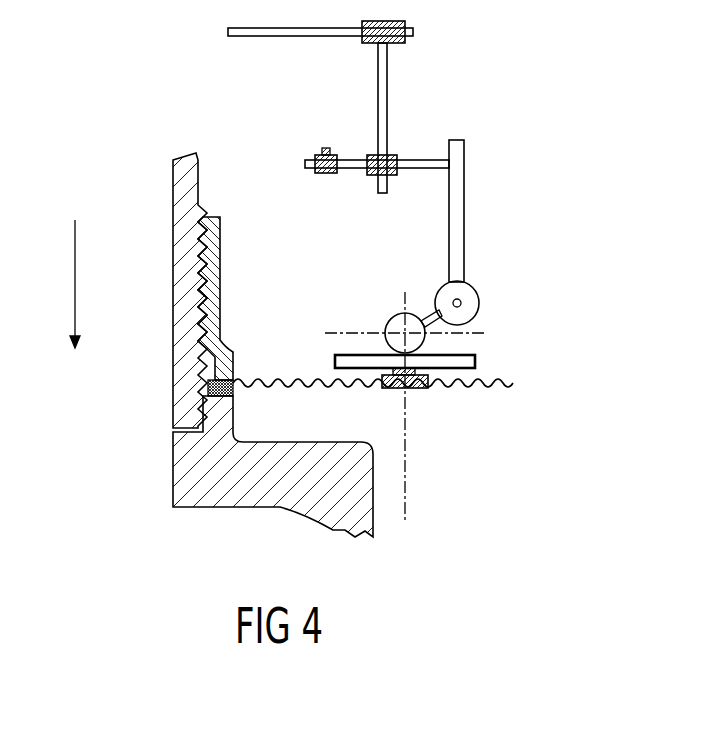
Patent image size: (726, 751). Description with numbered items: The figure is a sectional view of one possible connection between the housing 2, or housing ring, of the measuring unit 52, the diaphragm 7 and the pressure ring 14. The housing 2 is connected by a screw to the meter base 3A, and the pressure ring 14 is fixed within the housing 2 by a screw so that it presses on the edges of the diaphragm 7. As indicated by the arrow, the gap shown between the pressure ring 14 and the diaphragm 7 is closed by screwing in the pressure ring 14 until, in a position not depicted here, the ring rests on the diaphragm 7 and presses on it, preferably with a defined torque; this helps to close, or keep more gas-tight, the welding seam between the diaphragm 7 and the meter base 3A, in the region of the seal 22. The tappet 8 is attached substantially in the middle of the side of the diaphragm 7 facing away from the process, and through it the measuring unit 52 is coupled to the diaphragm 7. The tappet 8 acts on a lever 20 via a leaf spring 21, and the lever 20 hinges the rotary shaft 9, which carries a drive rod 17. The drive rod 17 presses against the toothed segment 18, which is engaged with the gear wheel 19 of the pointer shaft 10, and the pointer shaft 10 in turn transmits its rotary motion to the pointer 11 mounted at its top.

The measuring unit 52 is at (492, 72).
The housing 2 is at (173, 210).
The pressure ring 14 is at (216, 254).
The seal 22 is at (233, 390).
The meter base 3A is at (180, 468).
The diaphragm 7 is at (450, 388).
The pointer 11 is at (257, 37).
The pointer shaft 10 is at (388, 70).
The toothed segment 18 is at (306, 164).
The gear wheel 19 is at (375, 156).
The drive rod 17 is at (465, 193).
The rotary shaft 9 is at (479, 300).
The lever 20 is at (395, 318).
The leaf spring 21 is at (338, 361).
The tappet 8 is at (413, 388).